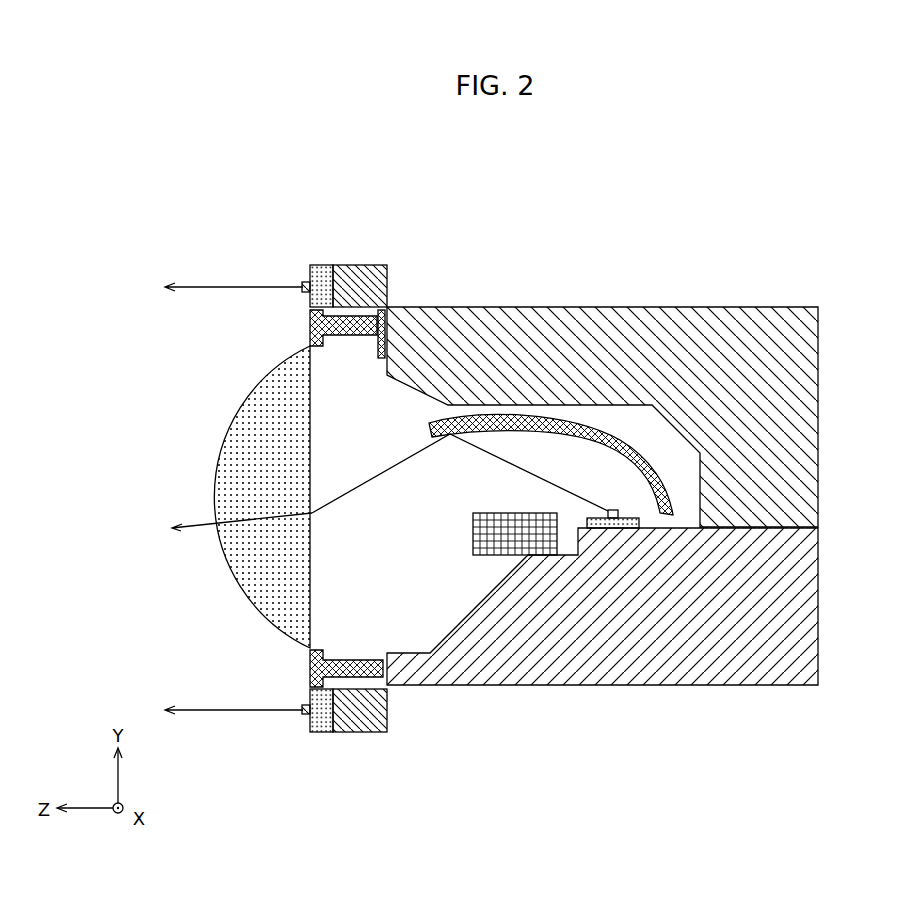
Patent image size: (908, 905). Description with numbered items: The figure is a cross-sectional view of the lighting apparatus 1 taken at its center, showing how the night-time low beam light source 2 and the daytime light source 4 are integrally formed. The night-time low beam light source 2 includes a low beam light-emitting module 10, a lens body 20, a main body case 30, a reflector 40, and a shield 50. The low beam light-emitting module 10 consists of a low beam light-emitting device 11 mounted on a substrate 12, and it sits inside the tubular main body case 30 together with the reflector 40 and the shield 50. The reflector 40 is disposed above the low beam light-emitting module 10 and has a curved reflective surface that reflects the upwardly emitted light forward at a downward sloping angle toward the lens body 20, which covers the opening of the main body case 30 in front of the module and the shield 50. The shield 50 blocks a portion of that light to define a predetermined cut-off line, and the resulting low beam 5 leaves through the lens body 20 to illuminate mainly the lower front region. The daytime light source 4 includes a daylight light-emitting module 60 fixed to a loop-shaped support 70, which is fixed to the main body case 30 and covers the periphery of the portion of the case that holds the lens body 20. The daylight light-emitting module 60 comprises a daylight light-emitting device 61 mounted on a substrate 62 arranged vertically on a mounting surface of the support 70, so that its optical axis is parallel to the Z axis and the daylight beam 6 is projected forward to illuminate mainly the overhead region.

The lighting apparatus 1 is at (851, 234).
The night-time low beam light source 2 is at (448, 783).
The daytime light source 4 is at (383, 202).
The low beam 5 is at (193, 525).
The daylight beam 6 is at (202, 286).
The low beam light-emitting module 10 is at (660, 750).
The low beam light-emitting device 11 is at (613, 518).
The substrate 12 is at (598, 528).
The lens body 20 is at (287, 570).
The main body case 30 is at (763, 655).
The reflector 40 is at (648, 472).
The shield 50 is at (510, 537).
The daylight light-emitting module 60 is at (347, 233).
The daylight light-emitting device 61 is at (305, 284).
The substrate 62 is at (318, 280).
The support 70 is at (360, 285).